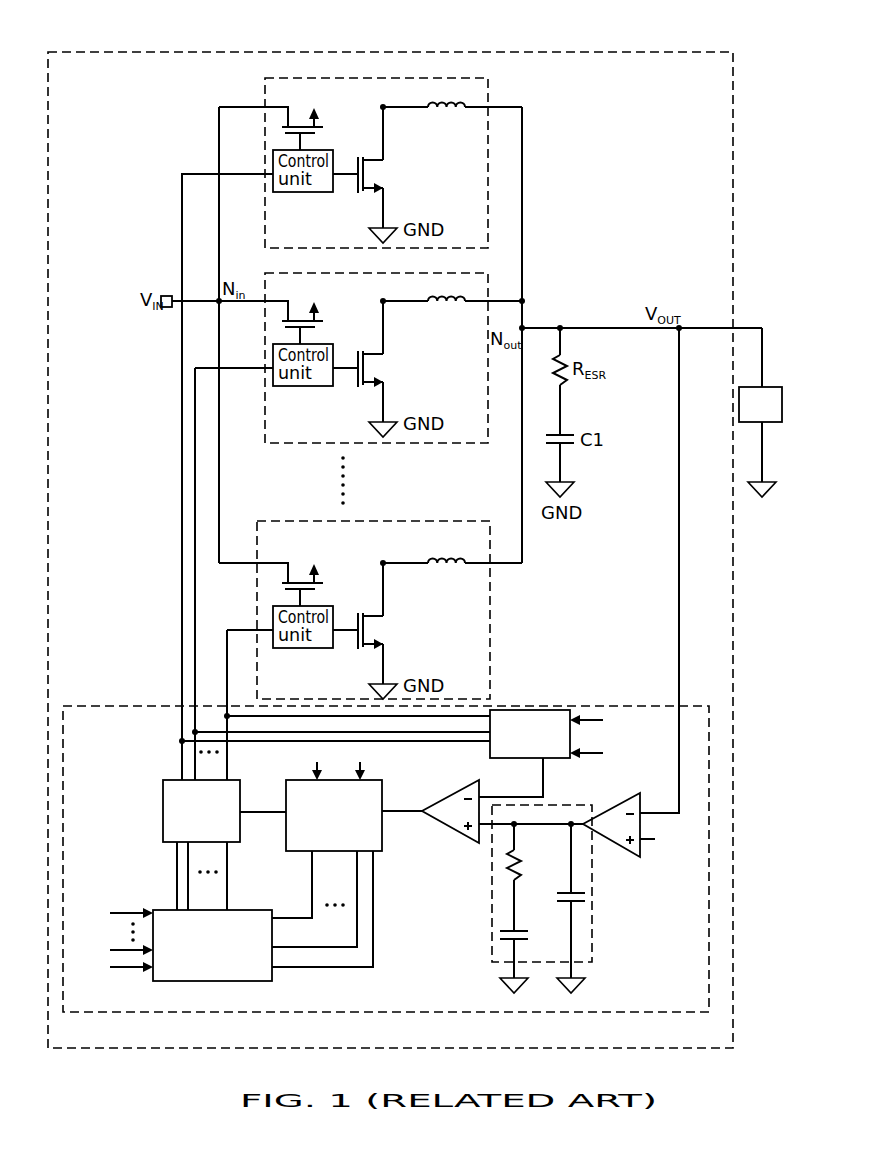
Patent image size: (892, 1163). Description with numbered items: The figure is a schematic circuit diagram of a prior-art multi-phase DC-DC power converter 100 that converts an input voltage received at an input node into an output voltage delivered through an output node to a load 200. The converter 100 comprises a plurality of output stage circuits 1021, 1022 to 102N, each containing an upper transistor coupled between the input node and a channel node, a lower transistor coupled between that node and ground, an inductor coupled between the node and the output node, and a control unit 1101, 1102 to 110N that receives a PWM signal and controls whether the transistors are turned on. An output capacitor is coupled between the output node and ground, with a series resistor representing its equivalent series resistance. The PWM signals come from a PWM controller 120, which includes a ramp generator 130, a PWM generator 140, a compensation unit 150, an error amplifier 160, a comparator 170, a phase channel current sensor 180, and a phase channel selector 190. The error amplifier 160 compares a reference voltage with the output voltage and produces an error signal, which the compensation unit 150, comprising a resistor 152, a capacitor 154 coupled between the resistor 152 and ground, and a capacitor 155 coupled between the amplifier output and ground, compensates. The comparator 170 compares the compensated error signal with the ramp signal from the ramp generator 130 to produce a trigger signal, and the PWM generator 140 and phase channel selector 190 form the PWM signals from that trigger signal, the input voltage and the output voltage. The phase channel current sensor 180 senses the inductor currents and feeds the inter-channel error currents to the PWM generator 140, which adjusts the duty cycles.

The multi-phase DC-DC power converter 100 is at (598, 52).
The output stage circuit 1021 is at (378, 163).
The output stage circuit 1022 is at (358, 386).
The output stage circuit 102N is at (390, 610).
The control unit 1101 is at (524, 88).
The control unit 1102 is at (370, 366).
The control unit 110N is at (515, 620).
The pulse width modulation (PWM) controller 120 is at (103, 705).
The ramp generator 130 is at (547, 710).
The PWM generator 140 is at (392, 780).
The compensation unit 150 is at (549, 906).
The resistor 152 is at (505, 868).
The capacitor 154 is at (500, 938).
The capacitor 155 is at (585, 899).
The error amplifier 160 is at (645, 852).
The comparator 170 is at (440, 826).
The phase channel current sensor 180 is at (157, 910).
The phase channel selector 190 is at (163, 797).
The load 200 is at (775, 387).